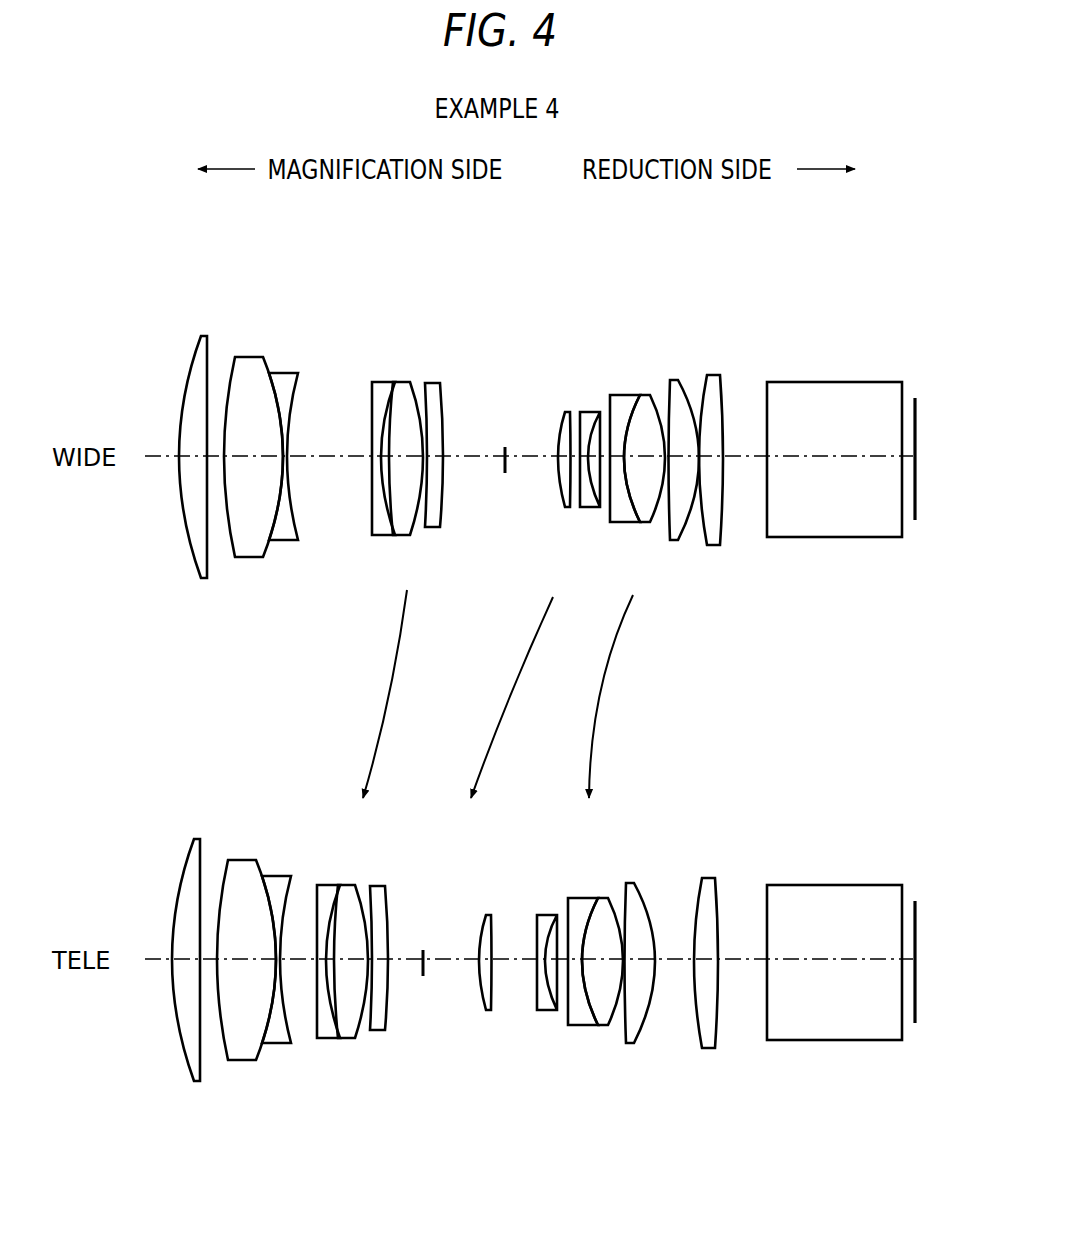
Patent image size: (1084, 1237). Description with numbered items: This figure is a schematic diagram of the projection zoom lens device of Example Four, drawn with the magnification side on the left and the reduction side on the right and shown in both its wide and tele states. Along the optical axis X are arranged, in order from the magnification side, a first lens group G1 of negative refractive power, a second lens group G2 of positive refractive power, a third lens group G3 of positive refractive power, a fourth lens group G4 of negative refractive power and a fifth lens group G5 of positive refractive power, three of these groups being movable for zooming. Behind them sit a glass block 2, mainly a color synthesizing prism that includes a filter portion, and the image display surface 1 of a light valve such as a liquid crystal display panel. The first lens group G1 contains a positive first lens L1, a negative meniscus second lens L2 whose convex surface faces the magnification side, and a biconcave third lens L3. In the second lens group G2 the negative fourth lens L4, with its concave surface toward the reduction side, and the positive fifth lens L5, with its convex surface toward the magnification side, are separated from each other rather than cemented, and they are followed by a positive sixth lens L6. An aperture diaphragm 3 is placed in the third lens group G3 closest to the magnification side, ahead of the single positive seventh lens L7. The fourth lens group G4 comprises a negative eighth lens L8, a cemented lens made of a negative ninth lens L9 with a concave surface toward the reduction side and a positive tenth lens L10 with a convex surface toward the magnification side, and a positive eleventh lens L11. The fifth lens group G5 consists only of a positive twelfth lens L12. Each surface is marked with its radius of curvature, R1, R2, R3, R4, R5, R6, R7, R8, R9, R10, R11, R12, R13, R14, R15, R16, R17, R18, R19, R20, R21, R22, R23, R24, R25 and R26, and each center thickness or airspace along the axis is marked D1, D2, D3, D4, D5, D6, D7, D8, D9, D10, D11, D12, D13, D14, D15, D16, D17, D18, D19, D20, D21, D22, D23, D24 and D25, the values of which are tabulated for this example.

The image display surface 1 is at (917, 476).
The glass block 2 is at (849, 540).
The aperture diaphragm 3 is at (508, 449).
The optical axis X is at (291, 425).
The first lens group G1 is at (317, 290).
The second lens group G2 is at (452, 290).
The third lens group G3 is at (575, 318).
The fourth lens group G4 is at (685, 290).
The fifth lens group G5 is at (733, 290).
The first lens L1 is at (197, 558).
The second lens L2 is at (241, 559).
The third lens L3 is at (286, 542).
The fourth lens L4 is at (374, 537).
The fifth lens L5 is at (401, 537).
The sixth lens L6 is at (433, 529).
The seventh lens L7 is at (564, 508).
The eighth lens L8 is at (594, 509).
The ninth lens L9 is at (619, 524).
The tenth lens L10 is at (649, 524).
The eleventh lens L11 is at (678, 543).
The twelfth lens L12 is at (716, 548).
The lens surface radius of curvature R1 is at (187, 392).
The lens surface radius of curvature R2 is at (208, 352).
The lens surface radius of curvature R3 is at (228, 378).
The lens surface radius of curvature R4 is at (262, 370).
The lens surface radius of curvature R5 is at (277, 400).
The lens surface radius of curvature R6 is at (296, 375).
The lens surface radius of curvature R7 is at (371, 393).
The lens surface radius of curvature R8 is at (393, 388).
The lens surface radius of curvature R9 is at (406, 388).
The lens surface radius of curvature R10 is at (427, 383).
The lens surface radius of curvature R11 is at (441, 386).
The lens surface radius of curvature R12 is at (445, 418).
The surface radius of curvature R13 is at (505, 447).
The lens surface radius of curvature R14 is at (561, 423).
The lens surface radius of curvature R15 is at (571, 415).
The lens surface radius of curvature R16 is at (582, 412).
The lens surface radius of curvature R17 is at (600, 412).
The lens surface radius of curvature R18 is at (610, 397).
The lens surface radius of curvature R19 is at (639, 397).
The lens surface radius of curvature R20 is at (650, 396).
The lens surface radius of curvature R21 is at (671, 392).
The lens surface radius of curvature R22 is at (683, 383).
The lens surface radius of curvature R23 is at (709, 376).
The lens surface radius of curvature R24 is at (721, 380).
The surface radius of curvature R25 is at (767, 385).
The surface radius of curvature R26 is at (902, 385).
The center thickness or airspace D1 is at (192, 448).
The center thickness or airspace D2 is at (212, 473).
The center thickness or airspace D3 is at (229, 470).
The center thickness or airspace D4 is at (257, 455).
The center thickness or airspace D5 is at (289, 462).
The center thickness or airspace D6 is at (312, 457).
The center thickness or airspace D7 is at (376, 456).
The center thickness or airspace D8 is at (386, 452).
The center thickness or airspace D9 is at (388, 468).
The center thickness or airspace D10 is at (434, 452).
The center thickness or airspace D11 is at (428, 470).
The center thickness or airspace D12 is at (488, 478).
The center thickness or airspace D13 is at (532, 476).
The center thickness or airspace D14 is at (562, 500).
The center thickness or airspace D15 is at (576, 512).
The center thickness or airspace D16 is at (592, 512).
The center thickness or airspace D17 is at (605, 517).
The center thickness or airspace D18 is at (623, 512).
The center thickness or airspace D19 is at (653, 514).
The center thickness or airspace D20 is at (667, 527).
The center thickness or airspace D21 is at (680, 535).
The center thickness or airspace D22 is at (704, 505).
The center thickness or airspace D23 is at (714, 440).
The center thickness or airspace D24 is at (744, 468).
The center thickness or airspace D25 is at (797, 478).